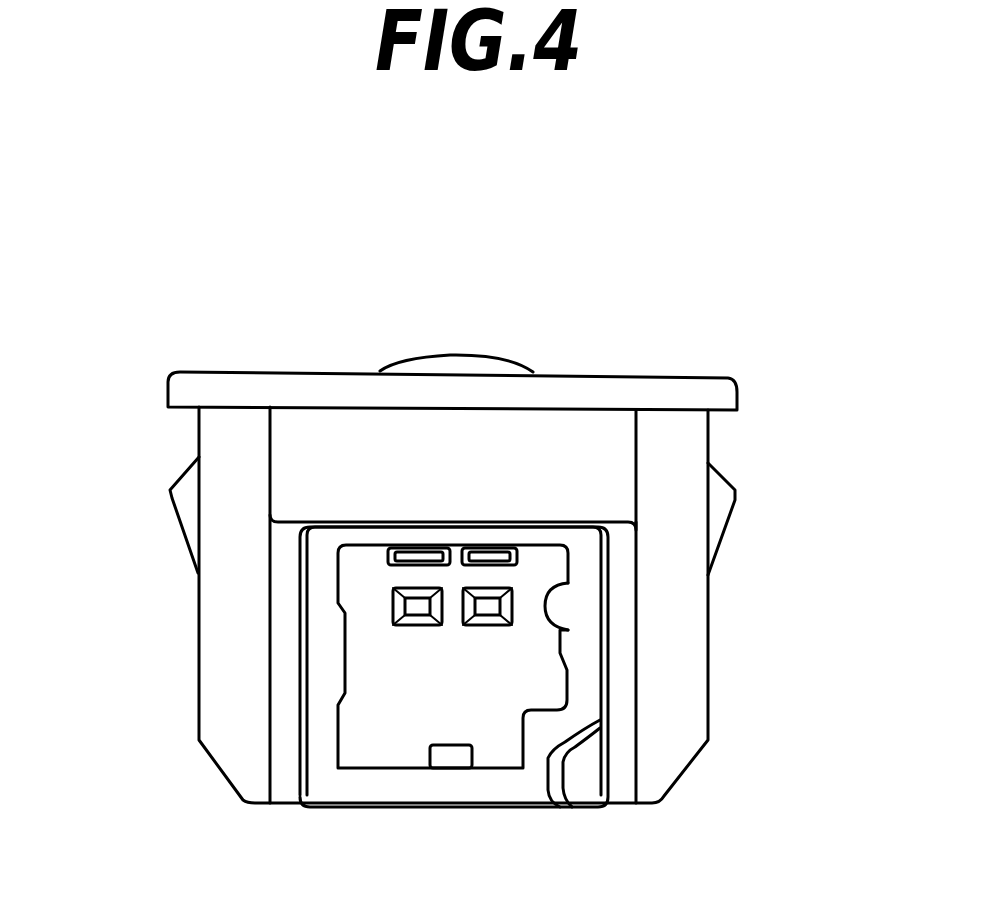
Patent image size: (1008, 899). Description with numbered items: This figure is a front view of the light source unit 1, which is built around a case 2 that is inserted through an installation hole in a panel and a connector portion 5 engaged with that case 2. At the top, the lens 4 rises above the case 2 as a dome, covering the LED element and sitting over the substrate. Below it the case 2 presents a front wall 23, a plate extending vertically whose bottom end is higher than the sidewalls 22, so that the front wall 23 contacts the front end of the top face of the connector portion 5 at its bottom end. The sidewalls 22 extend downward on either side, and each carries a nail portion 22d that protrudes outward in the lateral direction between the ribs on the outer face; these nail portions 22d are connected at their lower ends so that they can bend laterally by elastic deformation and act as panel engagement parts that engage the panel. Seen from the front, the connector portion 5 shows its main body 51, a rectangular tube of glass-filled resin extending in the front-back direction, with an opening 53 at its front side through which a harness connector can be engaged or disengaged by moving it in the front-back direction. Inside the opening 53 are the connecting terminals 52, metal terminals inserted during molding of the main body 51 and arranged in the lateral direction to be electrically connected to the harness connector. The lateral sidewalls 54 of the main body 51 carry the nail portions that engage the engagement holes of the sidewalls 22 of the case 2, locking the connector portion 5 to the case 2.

The light source unit 1 is at (787, 242).
The case 2 is at (227, 383).
The lens 4 is at (470, 357).
The connector portion 5 is at (582, 772).
The sidewall 22 is at (217, 677).
The nail portion 22d is at (173, 492).
The front wall 23 is at (313, 390).
The main body 51 is at (488, 806).
The connecting terminals 52 is at (488, 627).
The opening 53 is at (568, 582).
The sidewalls 54 is at (318, 622).